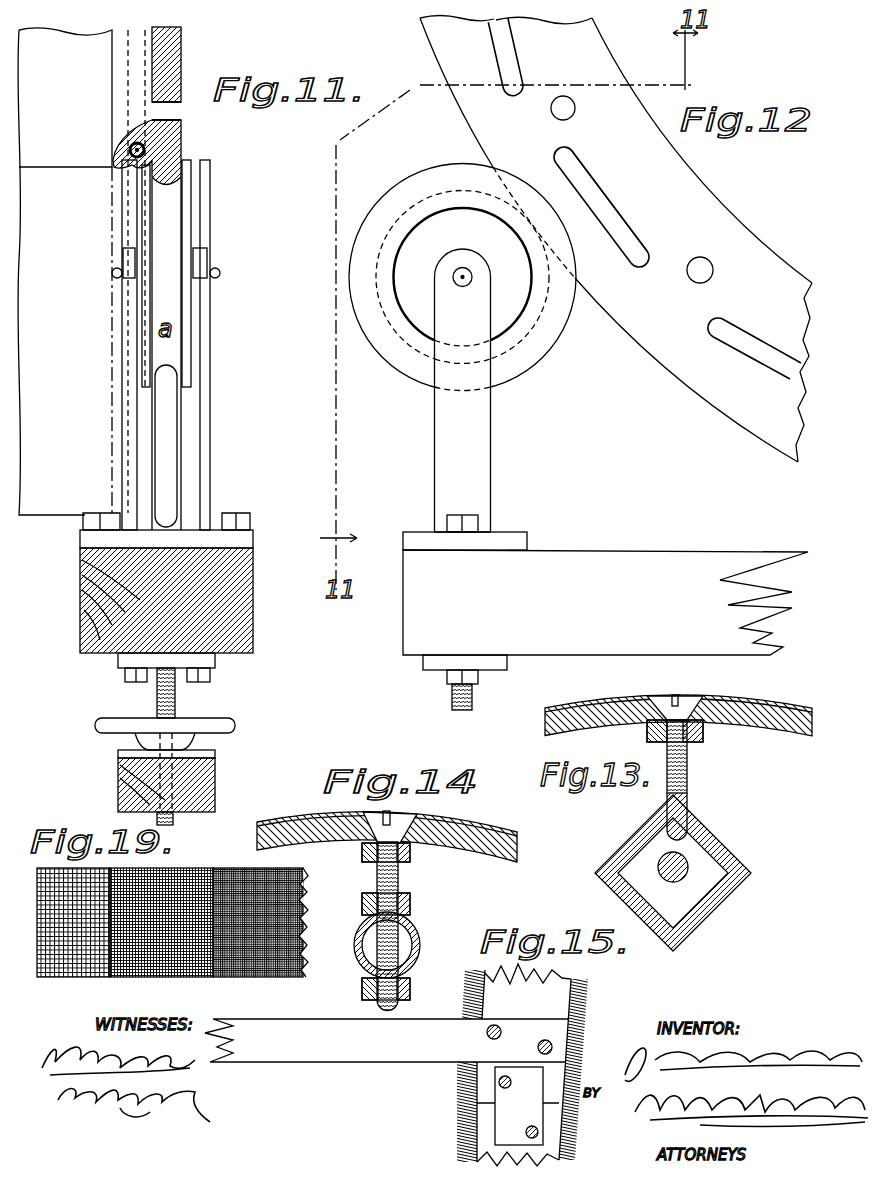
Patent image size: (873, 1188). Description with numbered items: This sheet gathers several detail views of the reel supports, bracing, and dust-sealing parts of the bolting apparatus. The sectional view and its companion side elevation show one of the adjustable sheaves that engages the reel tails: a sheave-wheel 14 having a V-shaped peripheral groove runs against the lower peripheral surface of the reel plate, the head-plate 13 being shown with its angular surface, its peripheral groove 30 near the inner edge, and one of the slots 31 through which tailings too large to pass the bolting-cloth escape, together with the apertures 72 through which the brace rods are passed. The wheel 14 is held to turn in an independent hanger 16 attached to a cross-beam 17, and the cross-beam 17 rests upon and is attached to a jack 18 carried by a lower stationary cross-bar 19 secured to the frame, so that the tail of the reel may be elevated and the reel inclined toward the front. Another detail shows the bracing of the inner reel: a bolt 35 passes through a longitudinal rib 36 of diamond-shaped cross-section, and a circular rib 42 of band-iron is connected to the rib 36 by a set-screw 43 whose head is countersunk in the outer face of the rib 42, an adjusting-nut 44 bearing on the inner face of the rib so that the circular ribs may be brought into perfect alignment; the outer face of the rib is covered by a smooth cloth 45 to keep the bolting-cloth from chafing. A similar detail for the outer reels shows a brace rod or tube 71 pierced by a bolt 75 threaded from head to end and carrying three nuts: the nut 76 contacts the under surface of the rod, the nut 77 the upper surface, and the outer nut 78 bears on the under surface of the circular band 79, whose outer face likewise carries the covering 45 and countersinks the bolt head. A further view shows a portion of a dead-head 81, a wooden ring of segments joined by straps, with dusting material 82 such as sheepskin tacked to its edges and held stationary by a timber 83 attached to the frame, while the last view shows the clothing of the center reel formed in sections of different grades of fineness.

In FIG. 11, the head-plate 13 is at (183, 72).
In FIG. 12, the head-plate 13 is at (616, 239).
In FIG. 11, the slots 31 is at (183, 110).
In FIG. 12, the slots 31 is at (631, 235).
In FIG. 11, the peripheral groove 30 is at (146, 154).
In FIG. 11, the sheave-wheels 14 is at (191, 233).
In FIG. 12, the sheave-wheels 14 is at (538, 347).
In FIG. 11, the hangers 16 is at (211, 368).
In FIG. 12, the hangers 16 is at (463, 390).
In FIG. 11, the cross-beam 17 is at (238, 597).
In FIG. 12, the cross-beam 17 is at (605, 601).
In FIG. 11, the jack 18 is at (176, 702).
In FIG. 12, the jack 18 is at (482, 692).
In FIG. 11, the cross-bar 19 is at (216, 792).
In FIG. 12, the apertures 72 is at (567, 119).
In FIG. 13, the cloth covering 45 is at (716, 690).
In FIG. 14, the cloth covering 45 is at (312, 818).
In FIG. 13, the adjusting-nut 44 is at (650, 733).
In FIG. 13, the set-screws 43 is at (688, 778).
In FIG. 13, the circular ribs 42 is at (778, 728).
In FIG. 13, the rib 36 is at (630, 835).
In FIG. 13, the bolts 35 is at (659, 866).
In FIG. 14, the circular ribs or bands 79 is at (480, 854).
In FIG. 14, the outer nut 78 is at (364, 856).
In FIG. 14, the bolts 75 is at (399, 882).
In FIG. 14, the nut 77 is at (362, 907).
In FIG. 14, the rods or tubes 71 is at (418, 948).
In FIG. 14, the nut 76 is at (363, 988).
In FIG. 15, the dead-head 81 is at (578, 1047).
In FIG. 15, the dusting material 82 is at (552, 1073).
In FIG. 15, the timbers 83 is at (387, 1040).